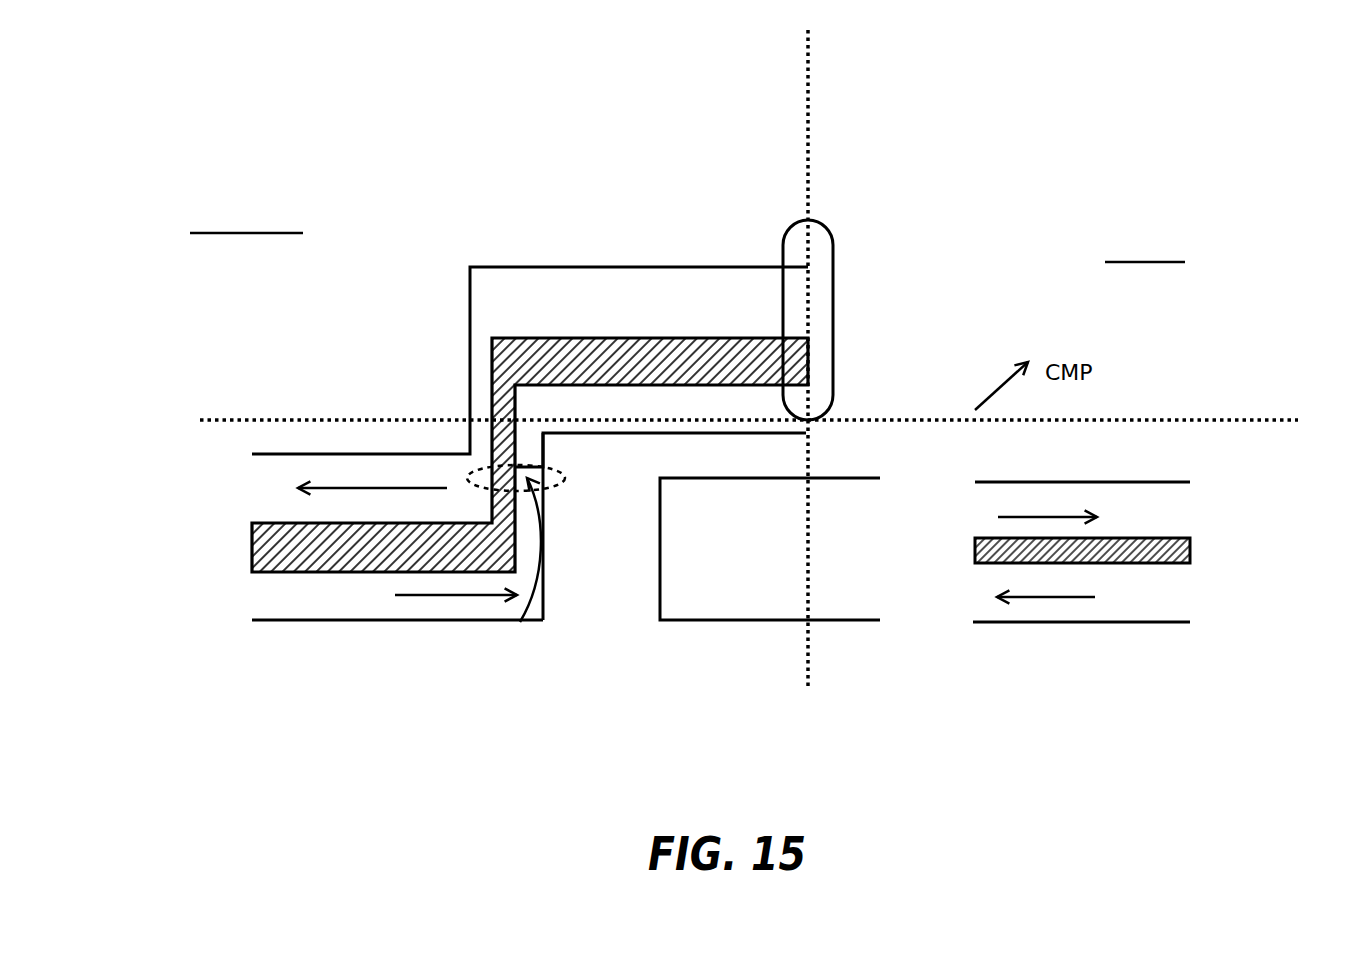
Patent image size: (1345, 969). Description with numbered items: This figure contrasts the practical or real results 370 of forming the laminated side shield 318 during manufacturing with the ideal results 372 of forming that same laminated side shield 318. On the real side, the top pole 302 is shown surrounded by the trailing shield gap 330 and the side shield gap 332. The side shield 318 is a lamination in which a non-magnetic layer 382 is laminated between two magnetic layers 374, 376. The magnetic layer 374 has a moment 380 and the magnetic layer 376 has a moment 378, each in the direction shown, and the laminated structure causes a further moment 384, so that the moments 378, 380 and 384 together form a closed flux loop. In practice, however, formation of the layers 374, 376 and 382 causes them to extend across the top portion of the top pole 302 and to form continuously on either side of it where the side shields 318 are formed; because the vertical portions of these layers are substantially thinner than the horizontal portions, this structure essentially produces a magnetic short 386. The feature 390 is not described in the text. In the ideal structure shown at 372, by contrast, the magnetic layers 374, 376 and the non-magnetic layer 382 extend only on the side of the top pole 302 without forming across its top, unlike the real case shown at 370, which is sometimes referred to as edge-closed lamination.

The practical or real results 370 is at (303, 147).
The ideal results 372 is at (1122, 152).
The laminated side shield 318 is at (492, 265).
The trailing shield gap 330 is at (638, 455).
The side shield gap 332 is at (613, 595).
The top pole 302 is at (755, 622).
The air bearing surface region 390 is at (830, 233).
The magnetic short 386 is at (482, 465).
The moment 380 is at (350, 487).
The moment 378 is at (468, 598).
The moment 384 is at (523, 573).
The magnetic layer 374 is at (278, 487).
The non-magnetic layer 382 is at (252, 546).
The magnetic layer 376 is at (275, 595).